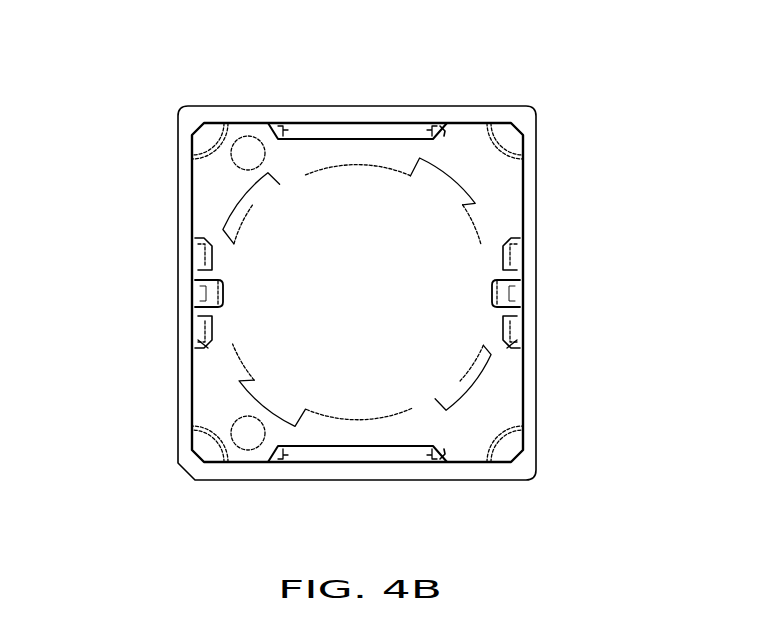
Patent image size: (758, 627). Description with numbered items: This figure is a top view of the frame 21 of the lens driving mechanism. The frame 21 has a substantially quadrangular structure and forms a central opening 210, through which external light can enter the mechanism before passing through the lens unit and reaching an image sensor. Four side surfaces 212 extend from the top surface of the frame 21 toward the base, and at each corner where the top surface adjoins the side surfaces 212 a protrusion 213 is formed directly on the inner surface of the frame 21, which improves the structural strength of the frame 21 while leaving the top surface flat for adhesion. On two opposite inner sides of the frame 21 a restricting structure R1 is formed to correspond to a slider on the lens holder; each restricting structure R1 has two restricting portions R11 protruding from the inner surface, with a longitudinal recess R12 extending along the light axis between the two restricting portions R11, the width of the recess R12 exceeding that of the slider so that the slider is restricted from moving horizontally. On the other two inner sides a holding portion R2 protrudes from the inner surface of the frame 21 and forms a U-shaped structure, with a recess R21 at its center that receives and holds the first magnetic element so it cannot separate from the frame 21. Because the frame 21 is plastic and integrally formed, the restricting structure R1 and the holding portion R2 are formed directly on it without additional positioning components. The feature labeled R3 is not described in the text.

The frame 21 is at (166, 96).
The opening 210 is at (275, 216).
The side surfaces 212 is at (450, 106).
The protrusion 213 is at (205, 143).
The restricting structure R1 is at (356, 293).
The restricting portions R11 is at (205, 260).
The longitudinal recess R12 is at (215, 292).
The holding portion R2 is at (452, 134).
The recess R21 is at (355, 136).
The recess R3 is at (213, 293).